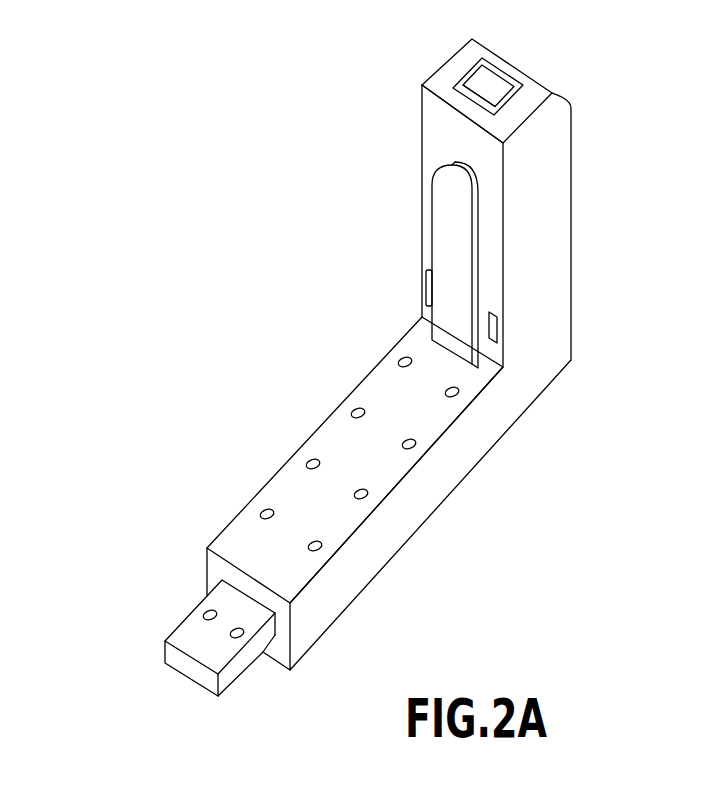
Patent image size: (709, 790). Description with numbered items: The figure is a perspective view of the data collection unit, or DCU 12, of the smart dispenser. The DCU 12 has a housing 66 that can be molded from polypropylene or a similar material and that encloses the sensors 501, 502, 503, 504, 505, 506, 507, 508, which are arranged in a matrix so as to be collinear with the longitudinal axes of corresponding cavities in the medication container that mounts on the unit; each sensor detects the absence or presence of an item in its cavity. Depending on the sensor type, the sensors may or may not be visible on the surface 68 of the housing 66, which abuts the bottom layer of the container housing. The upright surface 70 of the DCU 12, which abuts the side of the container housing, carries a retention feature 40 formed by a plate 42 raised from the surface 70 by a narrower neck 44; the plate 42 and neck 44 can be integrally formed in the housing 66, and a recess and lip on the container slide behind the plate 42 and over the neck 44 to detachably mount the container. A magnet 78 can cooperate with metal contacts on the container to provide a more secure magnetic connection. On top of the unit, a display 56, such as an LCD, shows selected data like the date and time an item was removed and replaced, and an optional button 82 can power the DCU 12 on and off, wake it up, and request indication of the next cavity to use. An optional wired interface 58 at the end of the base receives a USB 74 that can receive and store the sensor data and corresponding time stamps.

The data collection unit (DCU) 12 is at (197, 202).
The retention feature 40 is at (425, 217).
The plate 42 is at (443, 187).
The neck 44 is at (463, 157).
The display 56 is at (505, 88).
The wired interface 58 is at (262, 653).
The housing 66 is at (543, 272).
The surface 68 is at (237, 543).
The surface 70 is at (435, 105).
The USB 74 is at (188, 636).
The magnet 78 is at (490, 328).
The button 82 is at (463, 86).
The sensor 501 is at (262, 509).
The sensor 502 is at (321, 546).
The sensor 503 is at (309, 460).
The sensor 504 is at (366, 492).
The sensor 505 is at (355, 410).
The sensor 506 is at (415, 443).
The sensor 507 is at (402, 358).
The sensor 508 is at (459, 391).